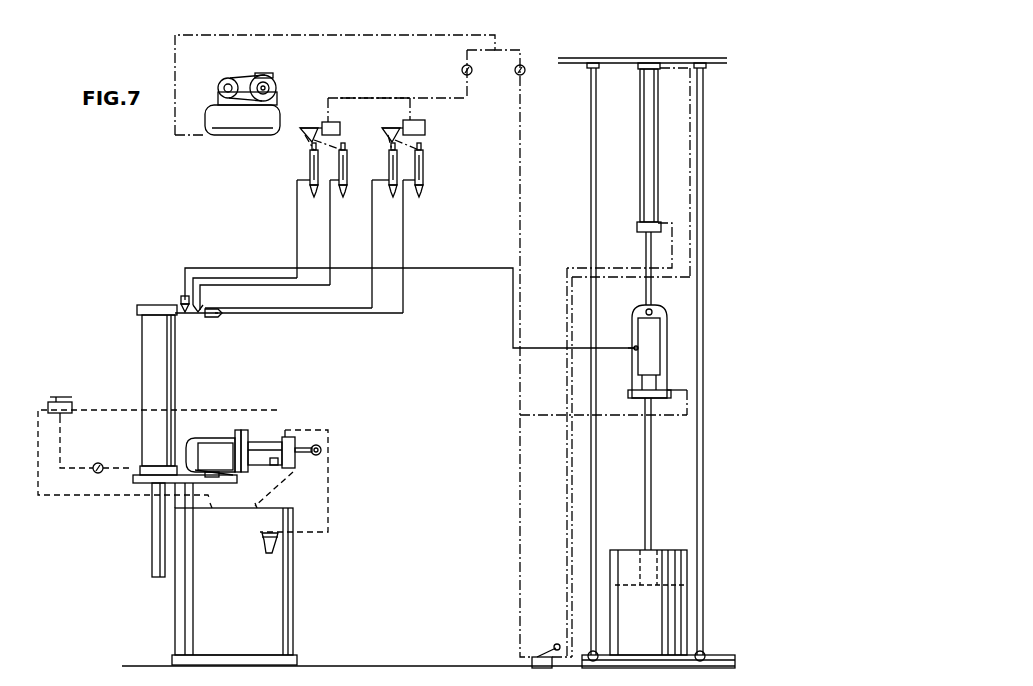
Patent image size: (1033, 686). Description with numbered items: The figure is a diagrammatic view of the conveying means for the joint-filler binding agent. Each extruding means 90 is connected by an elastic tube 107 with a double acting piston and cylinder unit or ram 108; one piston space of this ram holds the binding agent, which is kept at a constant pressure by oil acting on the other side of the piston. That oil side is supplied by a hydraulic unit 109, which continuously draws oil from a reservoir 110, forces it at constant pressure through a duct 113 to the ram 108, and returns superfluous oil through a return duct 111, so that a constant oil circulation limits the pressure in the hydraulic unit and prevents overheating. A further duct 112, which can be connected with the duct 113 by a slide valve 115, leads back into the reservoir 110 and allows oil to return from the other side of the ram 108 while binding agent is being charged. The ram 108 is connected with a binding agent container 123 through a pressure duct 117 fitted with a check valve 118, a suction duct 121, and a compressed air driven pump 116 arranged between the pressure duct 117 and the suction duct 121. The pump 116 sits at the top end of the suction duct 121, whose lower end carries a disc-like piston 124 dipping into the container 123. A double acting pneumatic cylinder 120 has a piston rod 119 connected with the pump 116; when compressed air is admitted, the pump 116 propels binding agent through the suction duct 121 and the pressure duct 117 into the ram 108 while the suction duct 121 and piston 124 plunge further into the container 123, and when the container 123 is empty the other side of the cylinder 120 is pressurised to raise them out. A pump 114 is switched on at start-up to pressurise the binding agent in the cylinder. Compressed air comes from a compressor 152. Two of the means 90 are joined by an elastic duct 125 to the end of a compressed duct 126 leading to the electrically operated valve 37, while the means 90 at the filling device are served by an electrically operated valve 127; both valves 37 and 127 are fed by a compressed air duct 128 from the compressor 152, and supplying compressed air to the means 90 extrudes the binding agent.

The electrically operated valve 37 is at (322, 128).
The extruding means 90 is at (343, 172).
The elastic tube 107 is at (300, 243).
The double acting piston and cylinder unit 108 is at (160, 373).
The hydraulic unit 109 is at (213, 435).
The reservoir 110 is at (278, 590).
The return duct 111 is at (285, 473).
The duct 112 is at (95, 497).
The duct 113 is at (100, 407).
The pump 114 is at (260, 442).
The slide valve 115 is at (65, 413).
The compressed air driven pump 116 is at (640, 358).
The pressure duct 117 is at (425, 270).
The check valve 118 is at (182, 297).
The piston rod 119 is at (646, 248).
The double acting pneumatic cylinder 120 is at (642, 148).
The suction duct 121 is at (646, 470).
The binding agent container 123 is at (612, 607).
The disc-like piston 124 is at (630, 566).
The elastic duct 125 is at (313, 147).
The compressed duct 126 is at (298, 128).
The electrically operated valve 127 is at (425, 127).
The compressed air duct 128 is at (345, 97).
The compressor 152 is at (235, 133).